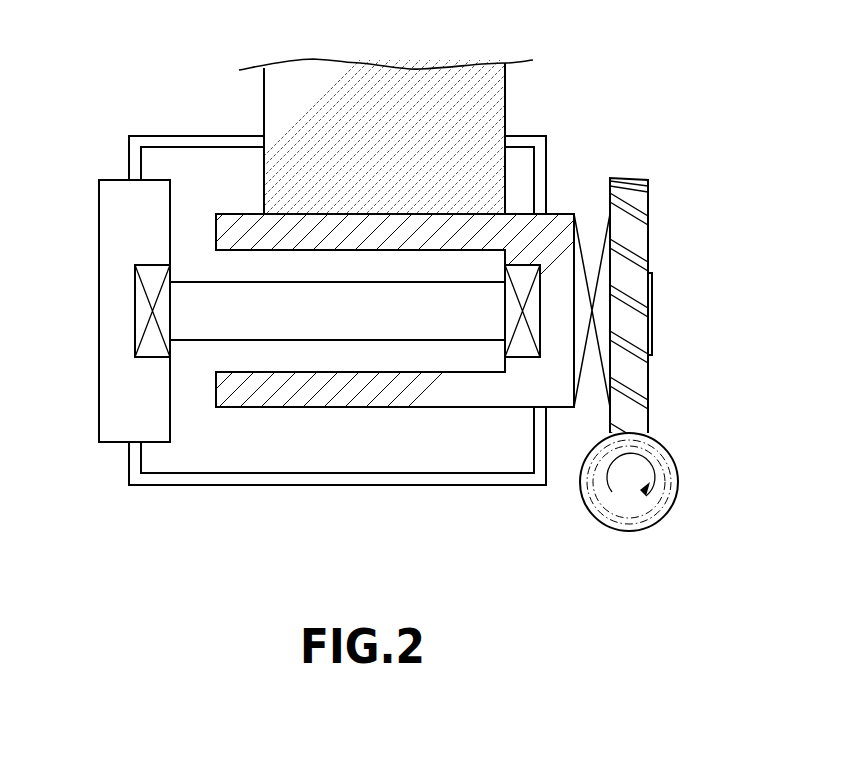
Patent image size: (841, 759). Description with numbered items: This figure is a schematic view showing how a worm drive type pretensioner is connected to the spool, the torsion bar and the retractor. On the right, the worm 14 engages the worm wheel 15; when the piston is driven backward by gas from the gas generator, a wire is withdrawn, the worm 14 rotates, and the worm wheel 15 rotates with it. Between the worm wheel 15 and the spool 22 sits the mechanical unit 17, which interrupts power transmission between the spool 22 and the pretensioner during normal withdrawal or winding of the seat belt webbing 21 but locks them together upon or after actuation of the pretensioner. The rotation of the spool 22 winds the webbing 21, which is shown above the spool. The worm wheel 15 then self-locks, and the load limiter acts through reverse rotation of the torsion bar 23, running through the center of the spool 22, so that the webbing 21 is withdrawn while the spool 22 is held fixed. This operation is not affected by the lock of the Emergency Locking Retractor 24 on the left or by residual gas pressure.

The worm 14 is at (665, 445).
The worm wheel 15 is at (637, 200).
The mechanical unit 17 is at (597, 223).
The seat belt webbing 21 is at (277, 118).
The spool 22 is at (420, 388).
The torsion bar 23 is at (317, 340).
The Emergency Locking Retractor 24 is at (98, 202).